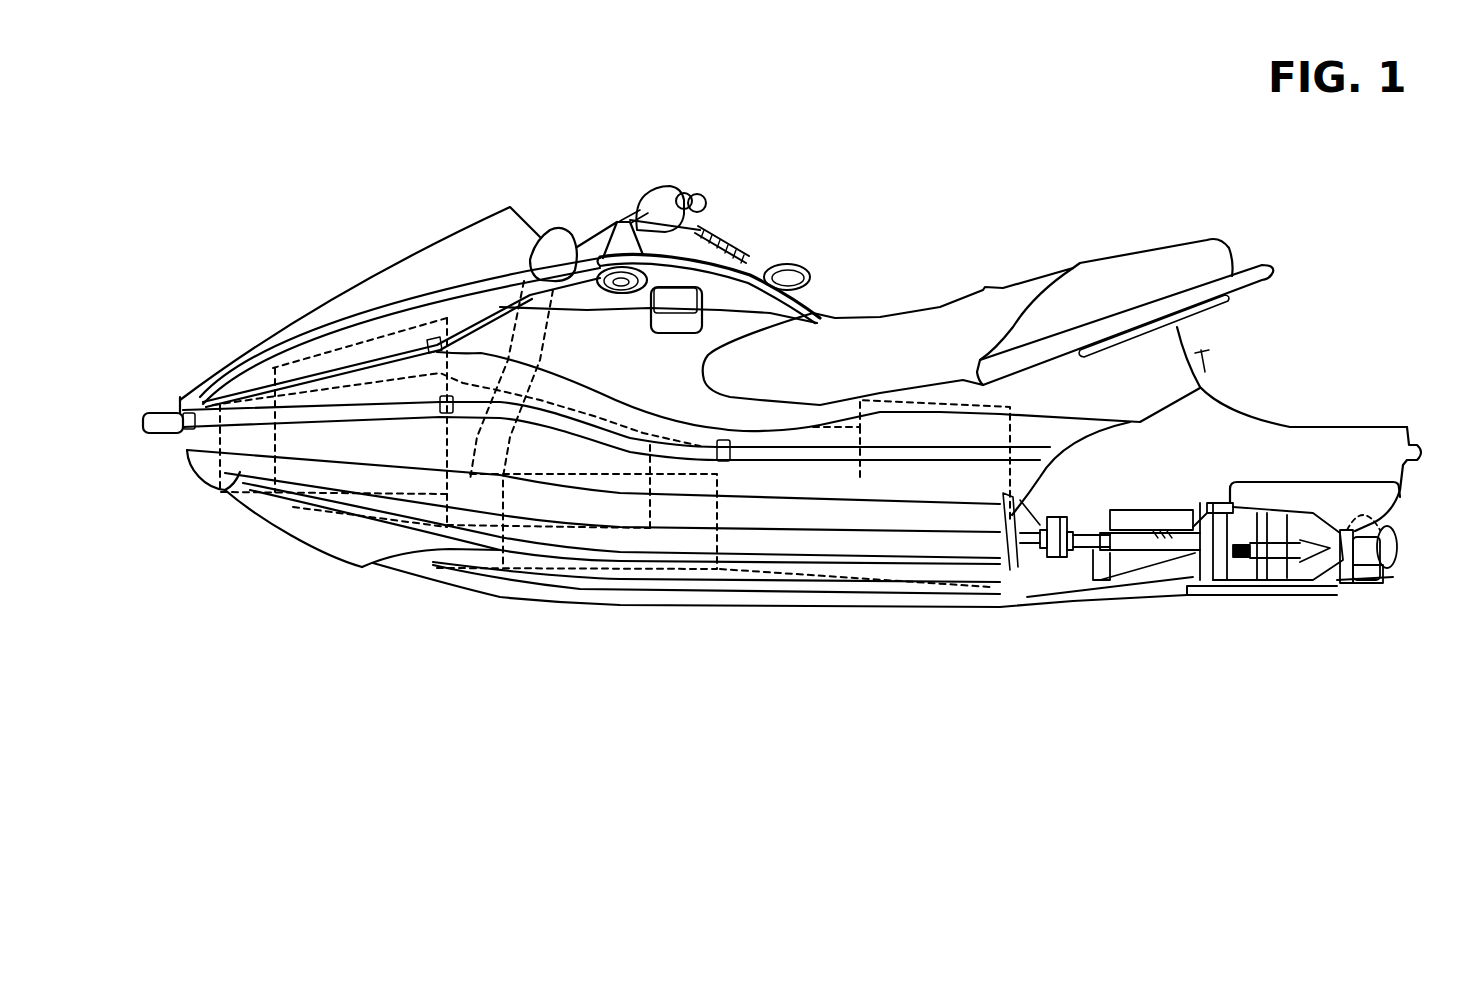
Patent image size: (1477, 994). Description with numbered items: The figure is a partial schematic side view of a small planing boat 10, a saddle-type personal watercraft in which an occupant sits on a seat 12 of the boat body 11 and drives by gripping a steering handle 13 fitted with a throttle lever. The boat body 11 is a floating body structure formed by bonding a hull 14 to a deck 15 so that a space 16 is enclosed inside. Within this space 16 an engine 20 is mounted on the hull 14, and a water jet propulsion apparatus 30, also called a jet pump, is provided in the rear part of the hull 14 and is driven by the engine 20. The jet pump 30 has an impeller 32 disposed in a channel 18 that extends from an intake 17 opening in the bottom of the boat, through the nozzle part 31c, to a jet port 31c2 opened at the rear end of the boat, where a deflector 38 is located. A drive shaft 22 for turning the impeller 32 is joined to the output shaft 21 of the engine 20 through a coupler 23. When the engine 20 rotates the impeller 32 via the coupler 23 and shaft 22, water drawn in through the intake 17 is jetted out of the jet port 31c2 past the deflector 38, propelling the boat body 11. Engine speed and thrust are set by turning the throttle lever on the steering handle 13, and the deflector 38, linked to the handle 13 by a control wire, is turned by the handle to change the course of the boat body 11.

The small planing boat 10 is at (530, 183).
The boat body 11 is at (1229, 343).
The seat 12 is at (858, 316).
The steering handle 13 is at (690, 192).
The hull 14 is at (961, 611).
The deck 15 is at (1170, 387).
The space 16 is at (764, 547).
The intake 17 is at (1127, 597).
The channel 18 is at (1205, 530).
The engine 20 is at (937, 400).
The output shaft 21 is at (1020, 550).
The shaft 22 is at (1200, 580).
The coupler 23 is at (1045, 560).
The water jet propulsion apparatus 30 is at (1271, 607).
The nozzle part 31c is at (1333, 582).
The jet port 31c2 is at (1363, 583).
The impeller 32 is at (1233, 583).
The deflector 38 is at (1390, 569).